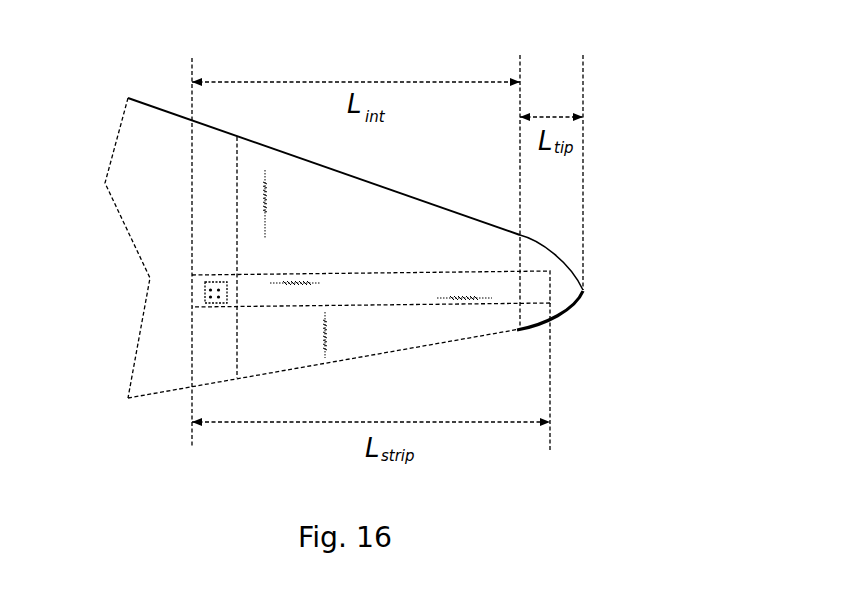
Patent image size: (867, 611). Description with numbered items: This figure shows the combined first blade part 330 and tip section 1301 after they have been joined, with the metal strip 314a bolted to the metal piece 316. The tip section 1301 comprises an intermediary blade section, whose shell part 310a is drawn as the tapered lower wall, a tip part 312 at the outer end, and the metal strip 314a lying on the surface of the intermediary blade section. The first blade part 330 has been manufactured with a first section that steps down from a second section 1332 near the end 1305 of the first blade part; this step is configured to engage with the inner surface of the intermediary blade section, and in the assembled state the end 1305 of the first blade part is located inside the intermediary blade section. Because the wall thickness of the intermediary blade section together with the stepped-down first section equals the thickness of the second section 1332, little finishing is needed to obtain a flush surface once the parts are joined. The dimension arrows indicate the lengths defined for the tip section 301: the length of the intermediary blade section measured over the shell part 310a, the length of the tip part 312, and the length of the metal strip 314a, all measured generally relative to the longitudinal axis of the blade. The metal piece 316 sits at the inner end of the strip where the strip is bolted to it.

The tip section 301 is at (78, 30).
The second section 1332 is at (163, 126).
The end of the first blade part 1305 is at (237, 162).
The metal strip 314a is at (455, 282).
The metal piece 316 is at (213, 305).
The shell part 310a is at (440, 322).
The tip part 312 is at (559, 300).
The first blade part 330 is at (141, 403).
The tip section 1301 is at (602, 189).